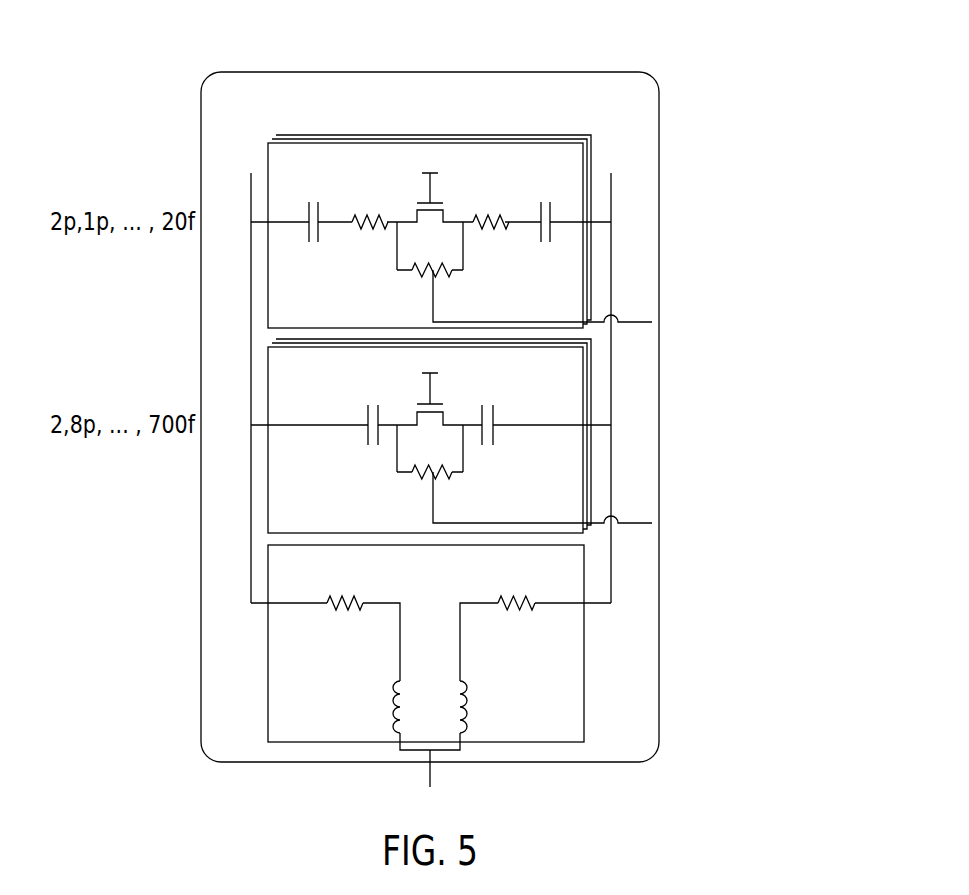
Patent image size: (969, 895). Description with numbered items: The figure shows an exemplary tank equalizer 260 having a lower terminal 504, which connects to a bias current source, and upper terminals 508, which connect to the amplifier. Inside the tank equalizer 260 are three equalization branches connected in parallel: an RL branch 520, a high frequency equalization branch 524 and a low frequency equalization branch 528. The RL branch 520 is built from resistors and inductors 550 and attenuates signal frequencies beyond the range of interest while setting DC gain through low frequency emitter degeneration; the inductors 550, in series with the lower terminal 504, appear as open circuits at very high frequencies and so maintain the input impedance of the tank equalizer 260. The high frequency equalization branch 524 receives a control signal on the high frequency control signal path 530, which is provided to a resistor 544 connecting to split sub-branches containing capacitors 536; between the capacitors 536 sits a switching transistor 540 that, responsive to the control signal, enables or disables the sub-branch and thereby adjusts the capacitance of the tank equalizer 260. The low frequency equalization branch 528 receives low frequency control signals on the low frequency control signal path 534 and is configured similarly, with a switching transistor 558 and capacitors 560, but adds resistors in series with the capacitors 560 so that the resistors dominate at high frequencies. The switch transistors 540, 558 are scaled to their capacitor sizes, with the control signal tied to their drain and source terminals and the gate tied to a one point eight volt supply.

The tank equalizer 260 is at (564, 72).
The upper terminals 508 is at (250, 183).
The low frequency equalization branch 528 is at (486, 234).
The high frequency equalization branch 524 is at (487, 438).
The RL branch 520 is at (431, 672).
The low frequency control signal path 534 is at (632, 318).
The high frequency control signal path 530 is at (632, 521).
The lower terminal 504 is at (428, 776).
The switching transistor 558 is at (432, 217).
The capacitors 560 is at (321, 240).
The switching transistor 540 is at (428, 403).
The capacitors 536 is at (366, 433).
The resistor 544 is at (412, 472).
The inductors 550 is at (397, 683).